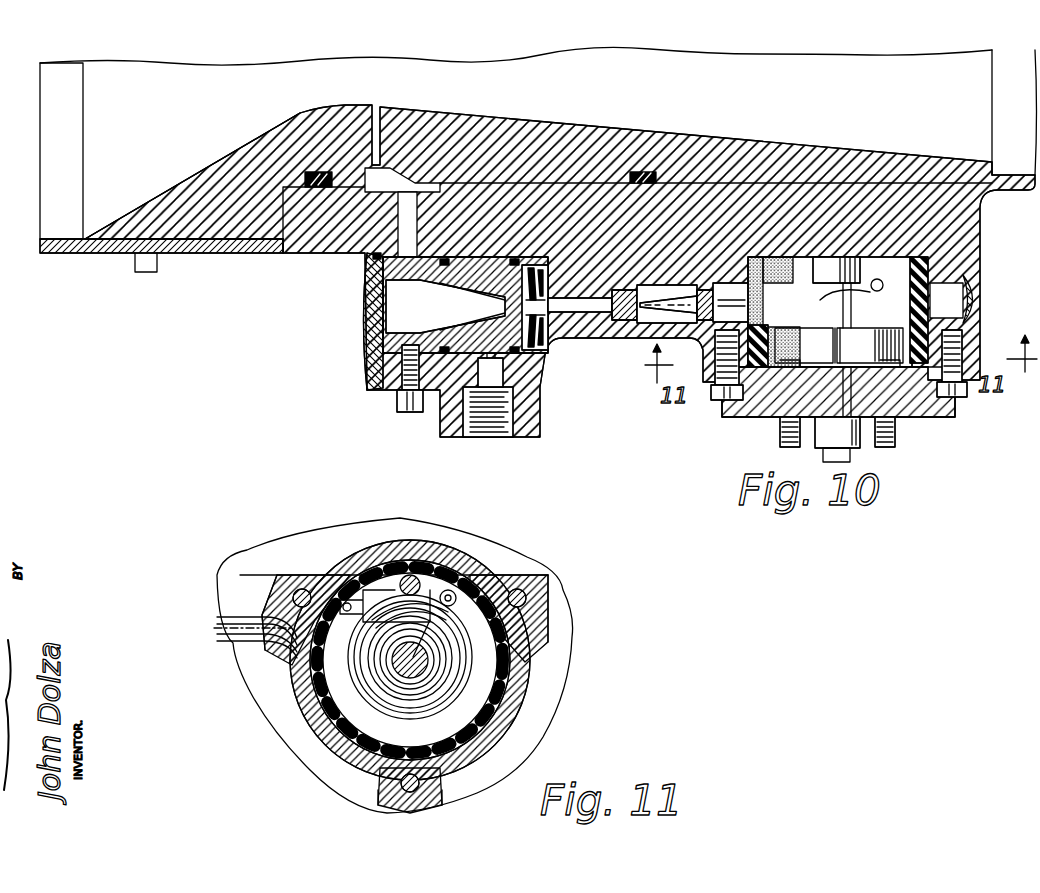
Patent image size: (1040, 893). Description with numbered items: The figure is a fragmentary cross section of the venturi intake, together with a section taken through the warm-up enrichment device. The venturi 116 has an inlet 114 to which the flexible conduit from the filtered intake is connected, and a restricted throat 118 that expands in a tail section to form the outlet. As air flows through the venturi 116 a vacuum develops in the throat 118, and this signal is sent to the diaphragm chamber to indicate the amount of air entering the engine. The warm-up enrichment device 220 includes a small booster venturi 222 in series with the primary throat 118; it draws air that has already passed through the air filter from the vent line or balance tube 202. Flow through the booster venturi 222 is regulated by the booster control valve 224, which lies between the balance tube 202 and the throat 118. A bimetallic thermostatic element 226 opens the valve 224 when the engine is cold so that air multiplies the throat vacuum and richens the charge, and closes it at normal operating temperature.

In FIG. 10, the inlet 114 is at (77, 254).
In FIG. 10, the venturi 116 is at (216, 258).
In FIG. 11, the venturi 116 is at (290, 710).
In FIG. 10, the restricted throat 118 is at (378, 92).
In FIG. 10, the vent line 202 is at (505, 422).
In FIG. 10, the warm-up enrichment device 220 is at (590, 345).
In FIG. 10, the booster venturi 222 is at (511, 266).
In FIG. 10, the booster control valve 224 is at (677, 300).
In FIG. 11, the booster control valve 224 is at (326, 633).
In FIG. 10, the bimetallic thermostatic element 226 is at (862, 356).
In FIG. 11, the bimetallic thermostatic element 226 is at (408, 702).